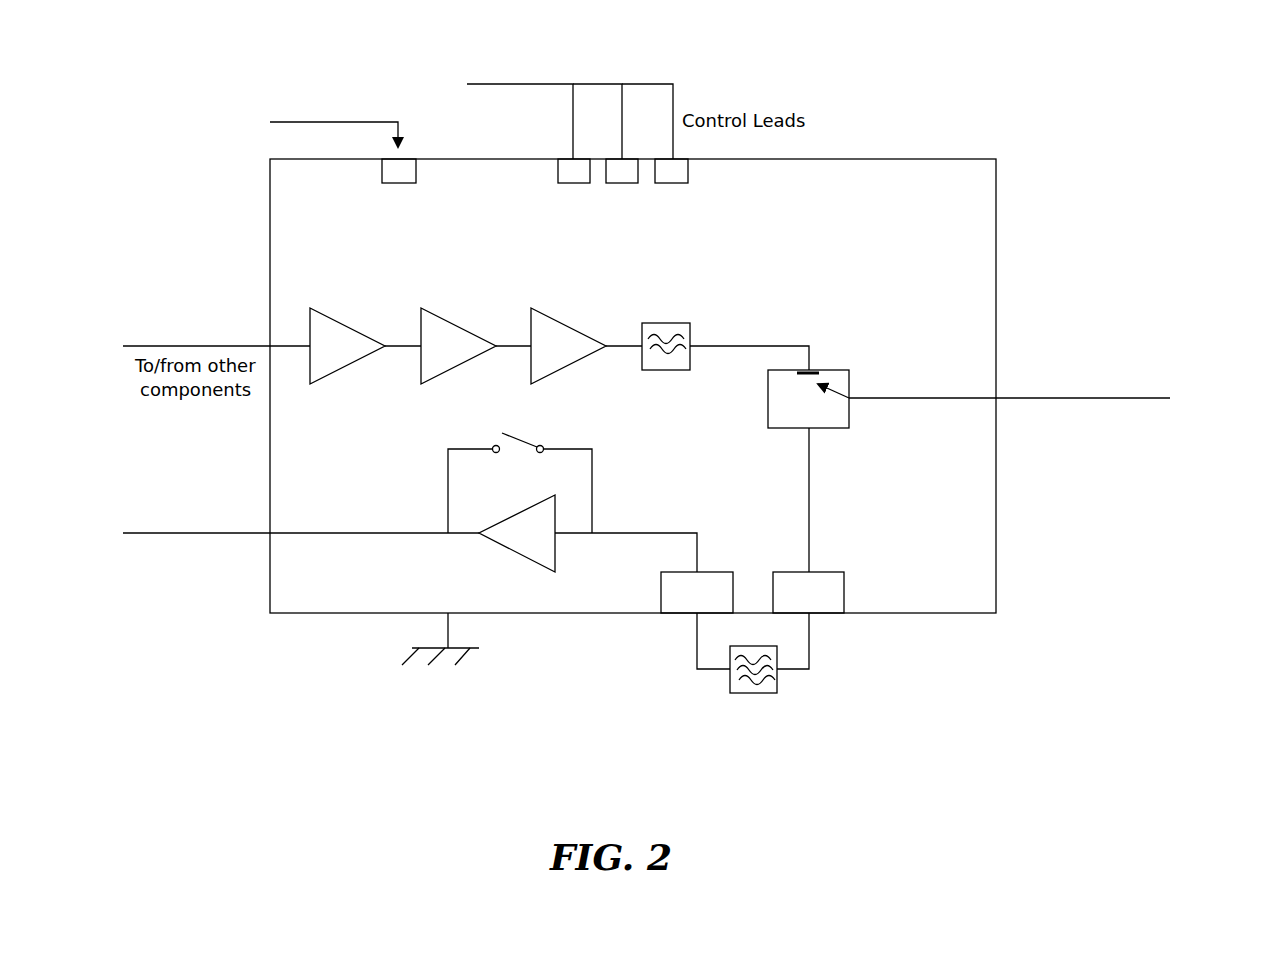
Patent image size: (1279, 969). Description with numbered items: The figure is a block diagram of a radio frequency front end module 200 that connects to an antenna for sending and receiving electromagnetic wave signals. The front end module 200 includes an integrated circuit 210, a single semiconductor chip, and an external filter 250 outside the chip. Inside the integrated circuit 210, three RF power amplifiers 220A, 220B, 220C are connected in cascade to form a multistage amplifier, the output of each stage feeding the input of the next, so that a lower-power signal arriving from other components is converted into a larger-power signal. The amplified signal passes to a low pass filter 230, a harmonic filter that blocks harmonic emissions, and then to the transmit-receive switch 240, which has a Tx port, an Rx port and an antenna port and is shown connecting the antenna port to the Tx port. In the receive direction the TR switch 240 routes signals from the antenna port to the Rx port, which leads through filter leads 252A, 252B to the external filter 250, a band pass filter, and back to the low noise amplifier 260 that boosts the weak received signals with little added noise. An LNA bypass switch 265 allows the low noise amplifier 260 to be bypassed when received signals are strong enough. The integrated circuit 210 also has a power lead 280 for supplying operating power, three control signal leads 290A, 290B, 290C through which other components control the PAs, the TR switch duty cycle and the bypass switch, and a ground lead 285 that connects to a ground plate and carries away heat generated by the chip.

The front end module 200 is at (1130, 142).
The integrated circuit 210 is at (633, 386).
The RF power amplifier 220A is at (340, 320).
The RF power amplifier 220B is at (450, 320).
The RF power amplifier 220C is at (560, 320).
The low pass filter 230 is at (672, 323).
The transmit-receive switch 240 is at (975, 398).
The external filter 250 is at (757, 694).
The filter lead 252A is at (708, 572).
The filter lead 252B is at (827, 572).
The low noise amplifier 260 is at (528, 505).
The LNA bypass switch 265 is at (596, 480).
The power lead 280 is at (398, 184).
The ground lead 285 is at (468, 652).
The control signal lead 290A is at (569, 184).
The control signal lead 290B is at (626, 184).
The control signal lead 290C is at (681, 184).